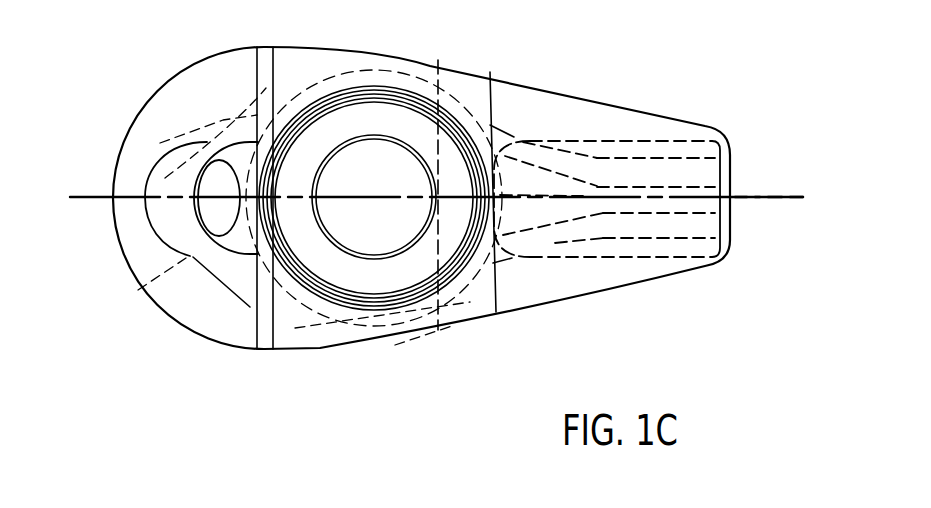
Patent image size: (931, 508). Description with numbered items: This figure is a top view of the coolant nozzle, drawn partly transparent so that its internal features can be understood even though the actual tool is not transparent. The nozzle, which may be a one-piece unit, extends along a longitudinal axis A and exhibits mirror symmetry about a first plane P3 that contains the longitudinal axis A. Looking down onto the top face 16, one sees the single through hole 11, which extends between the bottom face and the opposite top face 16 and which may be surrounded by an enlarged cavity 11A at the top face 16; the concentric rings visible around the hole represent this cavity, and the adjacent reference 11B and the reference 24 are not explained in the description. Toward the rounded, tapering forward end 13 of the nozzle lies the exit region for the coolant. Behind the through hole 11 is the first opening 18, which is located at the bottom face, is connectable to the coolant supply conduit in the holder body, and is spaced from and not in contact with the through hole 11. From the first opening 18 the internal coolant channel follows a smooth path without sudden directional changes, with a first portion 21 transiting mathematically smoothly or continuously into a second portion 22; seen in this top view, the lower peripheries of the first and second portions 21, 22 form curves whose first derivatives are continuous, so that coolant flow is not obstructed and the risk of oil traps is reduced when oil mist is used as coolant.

The single through hole 11 is at (330, 198).
The enlarged cavity 11A is at (326, 286).
The intermediate ring 11B is at (359, 283).
The forward end 13 is at (735, 191).
The top face 16 is at (522, 505).
The first opening 18 is at (240, 300).
The first portion of the coolant channel 21 is at (378, 324).
The second portion of the coolant channel 22 is at (452, 290).
The side chamber 24 is at (137, 282).
The longitudinal axis A is at (778, 201).
The first plane P3 is at (405, 505).